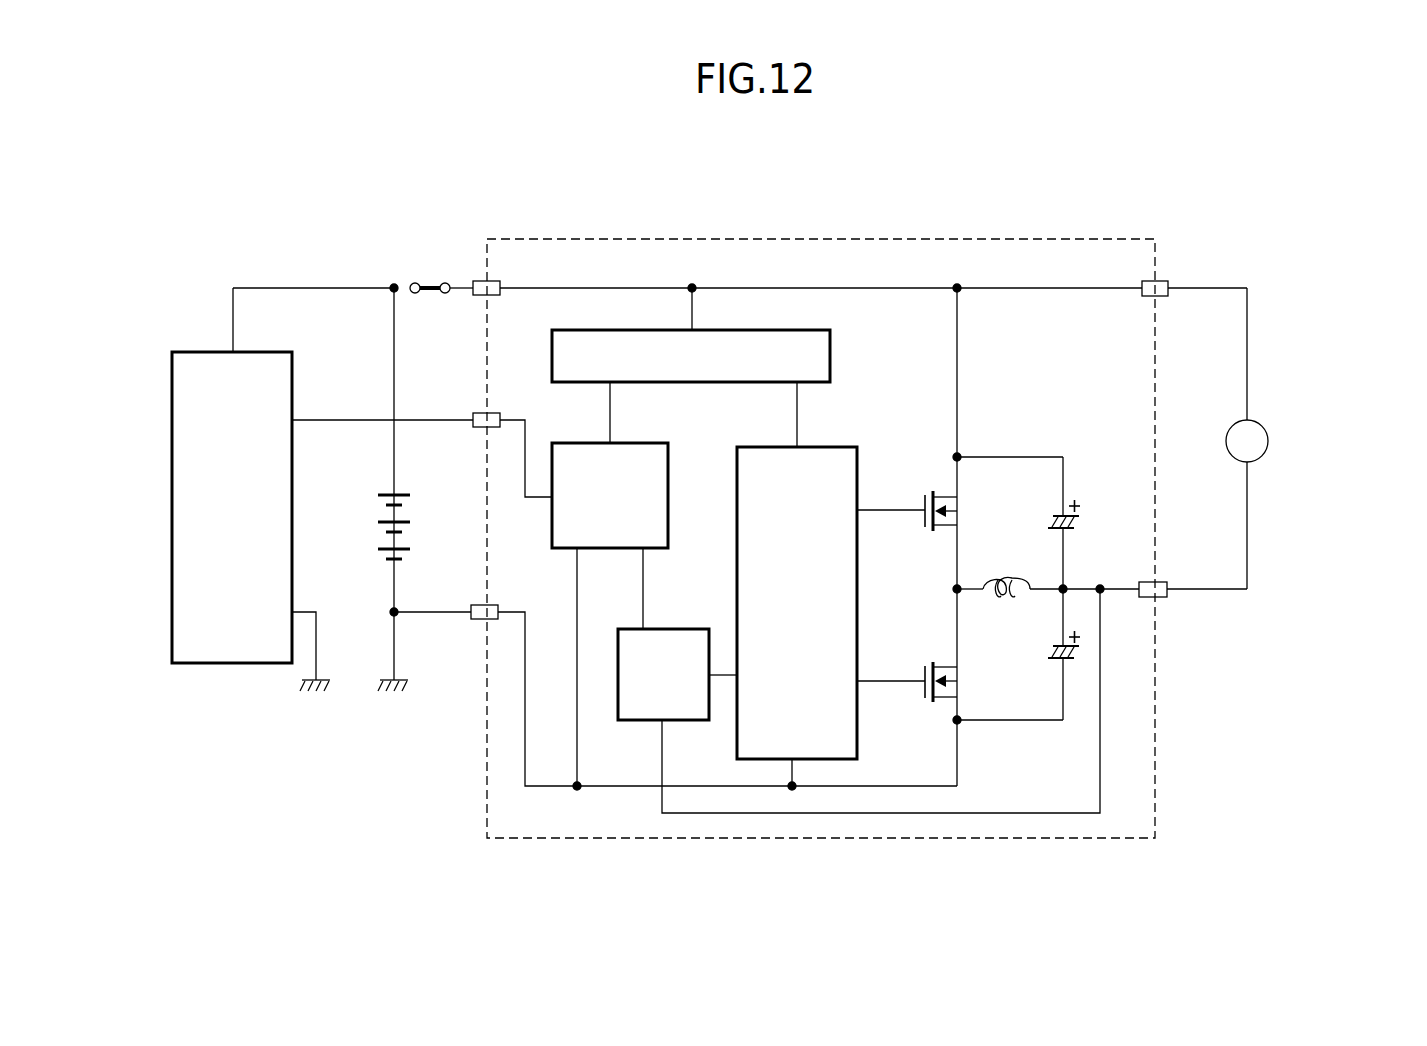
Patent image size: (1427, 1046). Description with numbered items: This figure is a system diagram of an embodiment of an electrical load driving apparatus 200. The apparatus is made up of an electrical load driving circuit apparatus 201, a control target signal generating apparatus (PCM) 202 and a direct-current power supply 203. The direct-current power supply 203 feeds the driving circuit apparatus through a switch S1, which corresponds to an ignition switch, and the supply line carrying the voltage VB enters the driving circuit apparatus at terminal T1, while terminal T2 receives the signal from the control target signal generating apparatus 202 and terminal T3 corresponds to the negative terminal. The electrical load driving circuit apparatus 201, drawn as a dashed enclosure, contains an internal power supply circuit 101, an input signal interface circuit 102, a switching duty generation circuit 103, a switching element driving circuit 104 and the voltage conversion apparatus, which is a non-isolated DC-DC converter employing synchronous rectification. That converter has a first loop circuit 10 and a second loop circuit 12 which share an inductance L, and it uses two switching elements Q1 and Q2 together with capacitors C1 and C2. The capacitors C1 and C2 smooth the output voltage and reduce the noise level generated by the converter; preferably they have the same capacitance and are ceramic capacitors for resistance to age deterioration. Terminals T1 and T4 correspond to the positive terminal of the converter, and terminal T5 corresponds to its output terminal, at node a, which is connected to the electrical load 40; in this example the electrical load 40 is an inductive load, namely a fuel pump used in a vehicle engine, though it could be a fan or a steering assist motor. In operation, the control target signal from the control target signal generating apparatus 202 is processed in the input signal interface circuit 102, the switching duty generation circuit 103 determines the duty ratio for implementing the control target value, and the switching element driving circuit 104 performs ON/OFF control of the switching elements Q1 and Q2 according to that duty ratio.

The electrical load driving apparatus 200 is at (757, 180).
The electrical load driving circuit apparatus 201 is at (1076, 229).
The control target signal generating apparatus 202 is at (185, 497).
The direct-current power supply 203 is at (378, 542).
The internal power supply circuit 101 is at (602, 338).
The input signal interface circuit 102 is at (562, 510).
The switching duty generation circuit 103 is at (635, 708).
The switching element driving circuit 104 is at (768, 745).
The first loop circuit 10 is at (1010, 455).
The second loop circuit 12 is at (1030, 734).
The electrical load 40 is at (1262, 425).
The switching element Q1 is at (926, 495).
The switching element Q2 is at (926, 703).
The capacitor C1 is at (1083, 505).
The capacitor C2 is at (1080, 647).
The inductance L is at (1003, 597).
The switch S1 is at (415, 272).
The terminal T1 is at (420, 285).
The terminal T2 is at (471, 405).
The terminal T3 is at (468, 598).
The terminal T4 is at (1167, 275).
The terminal T5 is at (1164, 575).
The battery voltage VB is at (268, 272).
The node a is at (1102, 592).